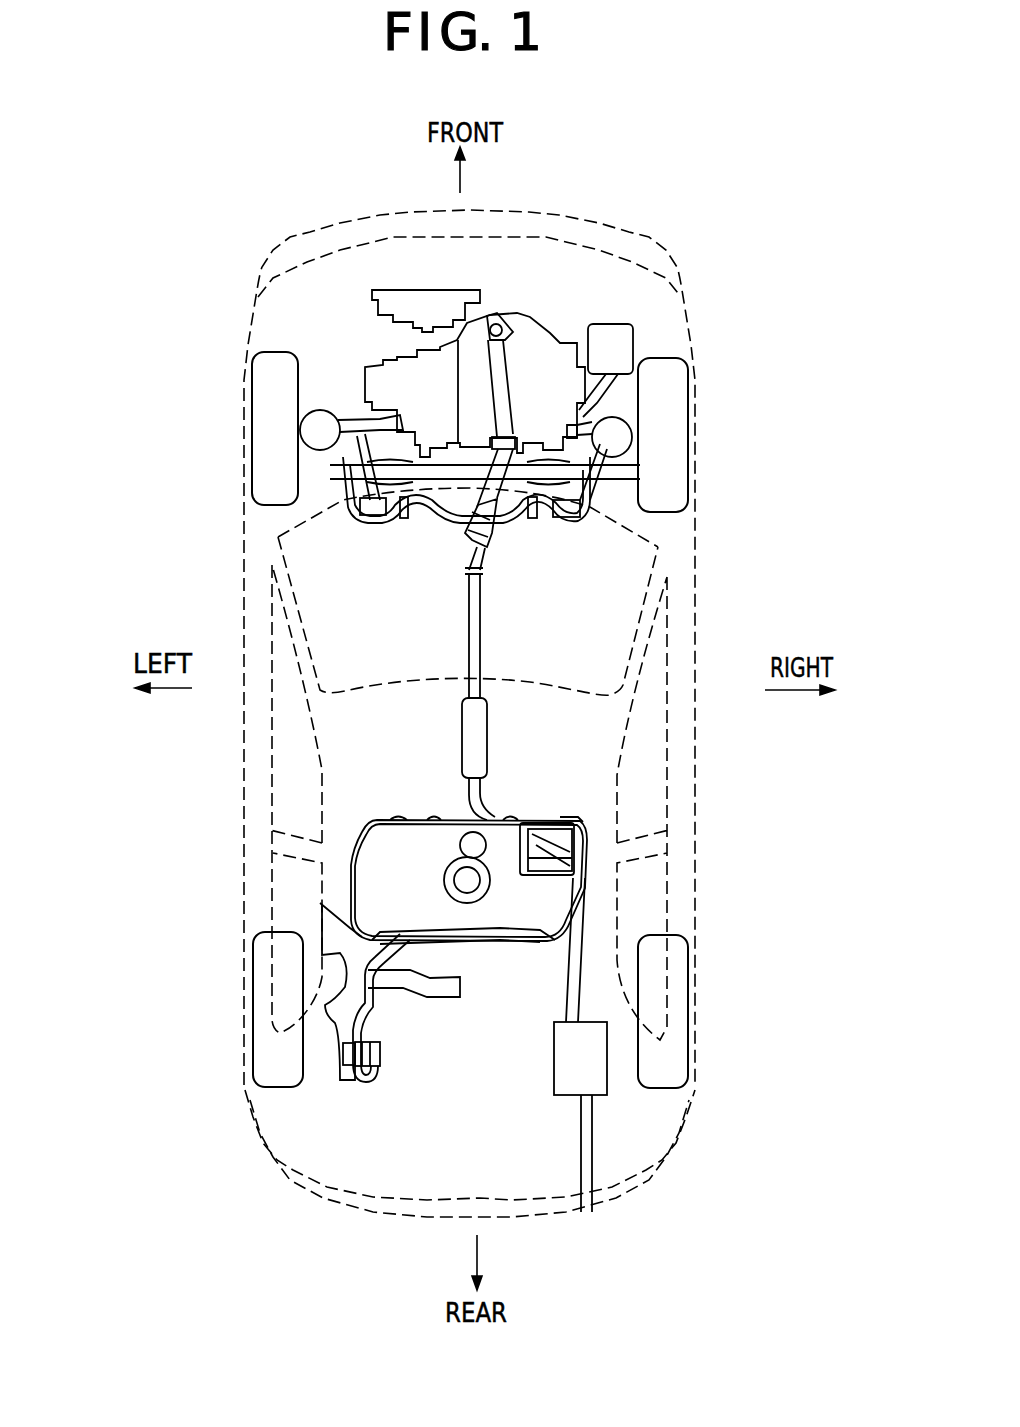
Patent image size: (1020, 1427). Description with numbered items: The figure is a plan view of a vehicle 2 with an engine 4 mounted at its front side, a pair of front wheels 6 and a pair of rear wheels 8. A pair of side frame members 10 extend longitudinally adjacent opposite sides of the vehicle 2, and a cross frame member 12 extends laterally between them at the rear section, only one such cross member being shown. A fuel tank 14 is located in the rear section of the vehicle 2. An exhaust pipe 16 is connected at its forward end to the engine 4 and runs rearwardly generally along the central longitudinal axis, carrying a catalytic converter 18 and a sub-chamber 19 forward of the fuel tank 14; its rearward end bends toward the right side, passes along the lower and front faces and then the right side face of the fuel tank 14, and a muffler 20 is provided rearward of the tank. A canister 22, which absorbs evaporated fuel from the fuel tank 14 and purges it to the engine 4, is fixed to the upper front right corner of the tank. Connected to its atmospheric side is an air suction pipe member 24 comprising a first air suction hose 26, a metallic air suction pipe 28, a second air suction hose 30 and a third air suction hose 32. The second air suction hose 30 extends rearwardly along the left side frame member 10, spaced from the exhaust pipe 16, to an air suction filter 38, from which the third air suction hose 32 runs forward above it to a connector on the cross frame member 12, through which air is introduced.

The vehicle 2 is at (699, 222).
The engine 4 is at (528, 322).
The front wheels 6 is at (260, 402).
The rear wheels 8 is at (258, 1047).
The side frame member 10 is at (338, 932).
The cross frame member 12 is at (425, 997).
The fuel tank 14 is at (360, 833).
The exhaust pipe 16 is at (483, 623).
The catalytic converter 18 is at (497, 540).
The sub-chamber 19 is at (487, 730).
The muffler 20 is at (600, 1083).
The canister 22 is at (517, 870).
The air suction pipe member 24 is at (432, 928).
The first air suction hose 26 is at (573, 817).
The air suction pipe 28 is at (550, 943).
The second air suction hose 30 is at (380, 955).
The third air suction hose 32 is at (363, 1083).
The air suction filter 38 is at (385, 1080).